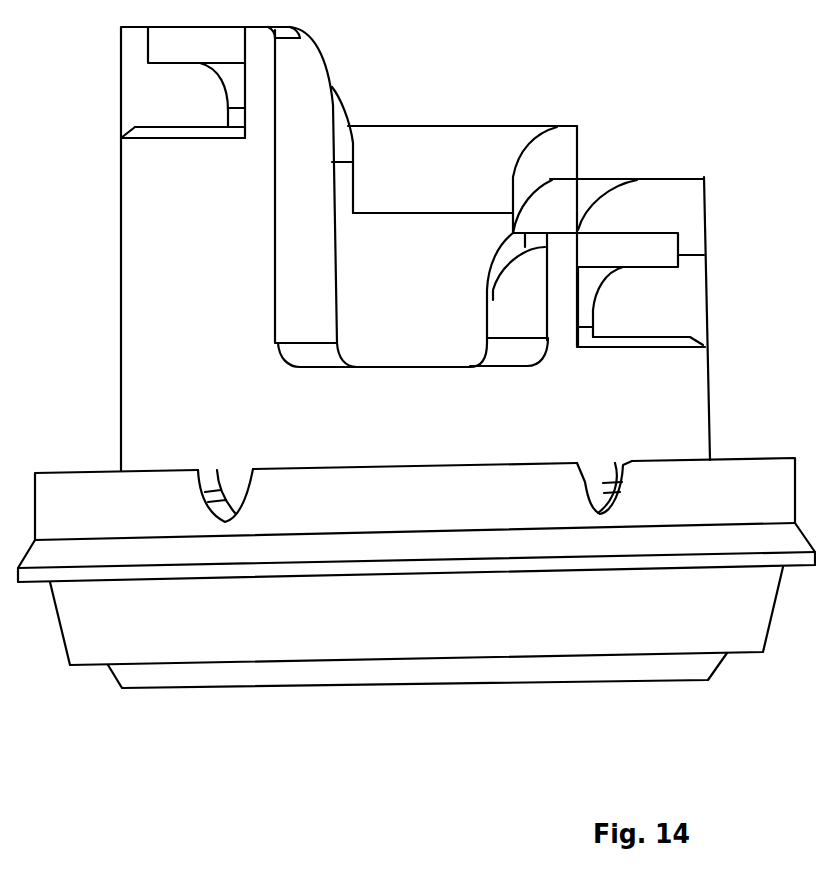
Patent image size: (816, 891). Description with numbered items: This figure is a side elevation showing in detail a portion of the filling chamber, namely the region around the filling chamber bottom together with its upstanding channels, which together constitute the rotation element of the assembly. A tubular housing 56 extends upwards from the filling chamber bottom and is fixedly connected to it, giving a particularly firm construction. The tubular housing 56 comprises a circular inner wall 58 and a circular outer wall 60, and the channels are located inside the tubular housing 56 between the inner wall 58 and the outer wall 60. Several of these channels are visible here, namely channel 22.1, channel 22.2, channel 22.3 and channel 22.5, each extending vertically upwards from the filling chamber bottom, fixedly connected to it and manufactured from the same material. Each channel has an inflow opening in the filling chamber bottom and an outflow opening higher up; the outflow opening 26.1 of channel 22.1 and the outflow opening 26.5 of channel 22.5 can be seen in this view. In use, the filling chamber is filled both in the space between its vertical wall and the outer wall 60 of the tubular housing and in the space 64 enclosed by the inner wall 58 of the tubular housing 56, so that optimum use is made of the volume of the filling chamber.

The outer wall 60 is at (148, 343).
The channel 22.5 is at (147, 225).
The outflow opening 26.5 is at (152, 92).
The inner wall 58 is at (392, 242).
The space 64 is at (426, 318).
The channel 22.3 is at (557, 158).
The channel 22.2 is at (687, 205).
The channel 22.1 is at (673, 303).
The outflow opening 26.1 is at (630, 310).
The tubular housing 56 is at (673, 418).